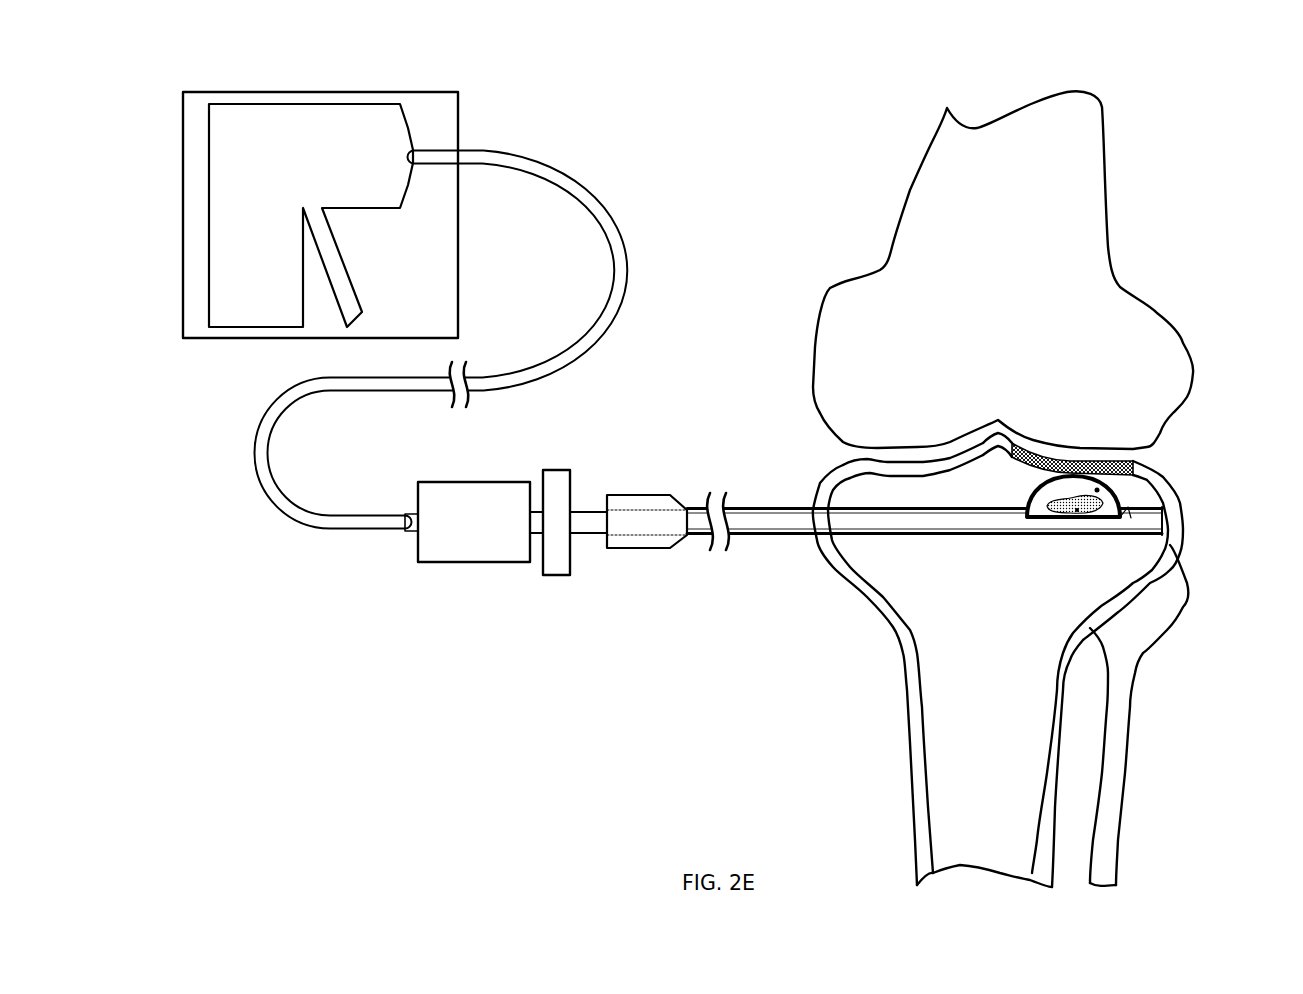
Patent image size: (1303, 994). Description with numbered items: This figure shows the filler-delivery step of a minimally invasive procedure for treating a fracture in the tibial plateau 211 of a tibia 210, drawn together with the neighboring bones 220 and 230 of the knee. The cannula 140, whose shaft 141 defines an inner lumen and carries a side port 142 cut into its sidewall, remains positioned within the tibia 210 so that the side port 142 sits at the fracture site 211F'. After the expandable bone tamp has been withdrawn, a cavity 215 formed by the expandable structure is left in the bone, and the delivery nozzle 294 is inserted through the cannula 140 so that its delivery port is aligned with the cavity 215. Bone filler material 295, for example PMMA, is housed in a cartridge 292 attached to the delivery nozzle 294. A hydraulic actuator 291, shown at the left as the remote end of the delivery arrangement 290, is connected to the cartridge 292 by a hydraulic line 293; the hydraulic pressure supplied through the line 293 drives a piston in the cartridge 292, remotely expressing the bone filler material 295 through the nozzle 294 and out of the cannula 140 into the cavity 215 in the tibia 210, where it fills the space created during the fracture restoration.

The cannula 140 is at (909, 520).
The shaft 141 is at (887, 540).
The side port 142 is at (1125, 503).
The tibia 210 is at (1009, 662).
The tibial plateau 211 is at (925, 457).
The treated lateral plateau region 211F' is at (1148, 393).
The cavity 215 is at (1108, 487).
The fibula 220 is at (1154, 632).
The femur 230 is at (1023, 272).
The delivery system 290 is at (474, 381).
The hydraulic actuator 291 is at (248, 342).
The cartridge 292 is at (443, 565).
The hydraulic line 293 is at (645, 283).
The delivery nozzle 294 is at (590, 537).
The bone filler material 295 is at (1077, 518).